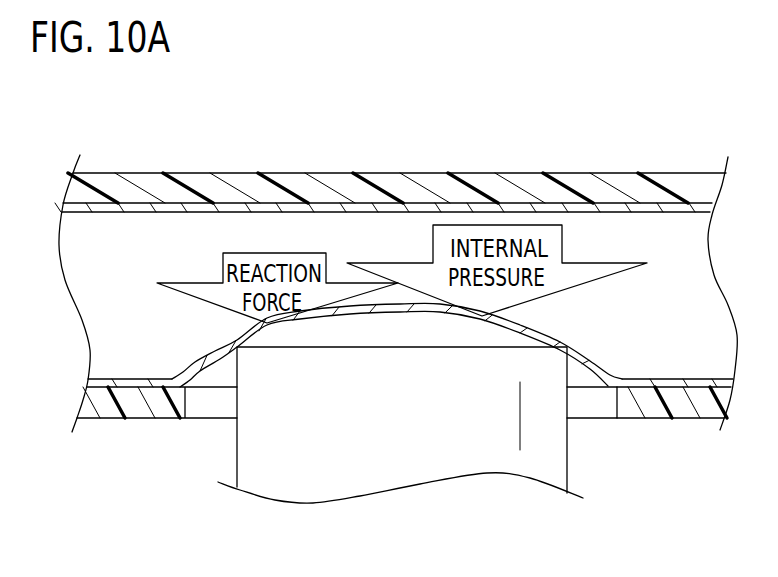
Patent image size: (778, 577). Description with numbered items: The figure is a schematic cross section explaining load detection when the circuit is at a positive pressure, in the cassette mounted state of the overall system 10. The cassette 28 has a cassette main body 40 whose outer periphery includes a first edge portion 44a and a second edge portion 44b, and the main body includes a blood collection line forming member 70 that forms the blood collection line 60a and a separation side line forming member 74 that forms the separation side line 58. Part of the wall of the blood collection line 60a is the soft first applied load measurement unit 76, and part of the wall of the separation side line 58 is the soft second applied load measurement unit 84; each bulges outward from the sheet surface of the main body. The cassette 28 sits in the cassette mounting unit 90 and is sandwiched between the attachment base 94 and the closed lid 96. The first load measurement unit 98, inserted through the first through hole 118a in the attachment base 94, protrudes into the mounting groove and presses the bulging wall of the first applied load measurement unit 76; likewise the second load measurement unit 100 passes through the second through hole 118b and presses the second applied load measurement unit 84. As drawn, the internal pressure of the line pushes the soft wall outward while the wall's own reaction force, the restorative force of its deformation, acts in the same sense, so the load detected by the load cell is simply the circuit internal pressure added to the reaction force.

The fuel cell stack 10 is at (110, 103).
The cassette 28 is at (686, 268).
The cassette main body 40 is at (722, 293).
The cassette mounting unit 90 is at (482, 172).
The lid 96 is at (386, 186).
The first edge portion 44a is at (237, 203).
The blood collection line forming member 70 is at (382, 158).
The separation side line forming member 74 is at (567, 212).
The blood collection line 60a is at (157, 414).
The separation side line 58 is at (157, 402).
The attachment base 94 is at (710, 418).
The second edge portion 44b is at (655, 419).
The first through hole 118a is at (599, 472).
The second through hole 118b is at (590, 407).
The first applied load measurement unit 76 is at (355, 345).
The second applied load measurement unit 84 is at (225, 342).
The first load measurement unit 98 is at (400, 450).
The second load measurement unit 100 is at (332, 465).